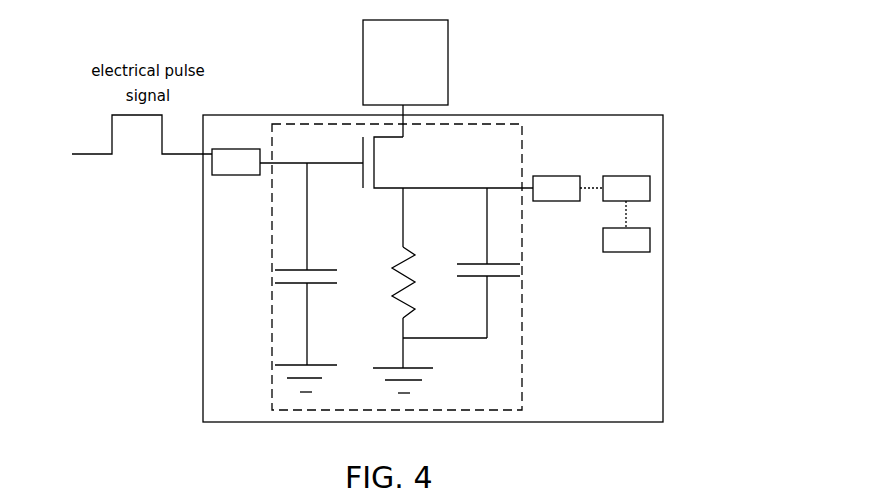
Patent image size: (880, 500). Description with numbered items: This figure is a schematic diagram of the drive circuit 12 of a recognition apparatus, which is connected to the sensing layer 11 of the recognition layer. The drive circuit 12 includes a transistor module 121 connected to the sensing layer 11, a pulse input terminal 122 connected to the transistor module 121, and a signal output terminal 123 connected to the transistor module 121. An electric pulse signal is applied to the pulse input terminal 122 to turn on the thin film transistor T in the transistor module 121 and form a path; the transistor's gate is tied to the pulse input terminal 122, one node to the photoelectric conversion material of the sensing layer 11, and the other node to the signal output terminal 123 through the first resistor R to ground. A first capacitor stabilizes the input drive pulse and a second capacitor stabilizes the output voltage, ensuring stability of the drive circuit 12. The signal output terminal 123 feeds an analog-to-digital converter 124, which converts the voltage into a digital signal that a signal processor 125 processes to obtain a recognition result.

The sensing layer 11 is at (448, 52).
The drive circuit 12 is at (663, 238).
The transistor module 121 is at (522, 316).
The pulse input terminal 122 is at (232, 177).
The signal output terminal 123 is at (558, 176).
The analog-to-digital converter 124 is at (622, 176).
The signal processor 125 is at (603, 240).